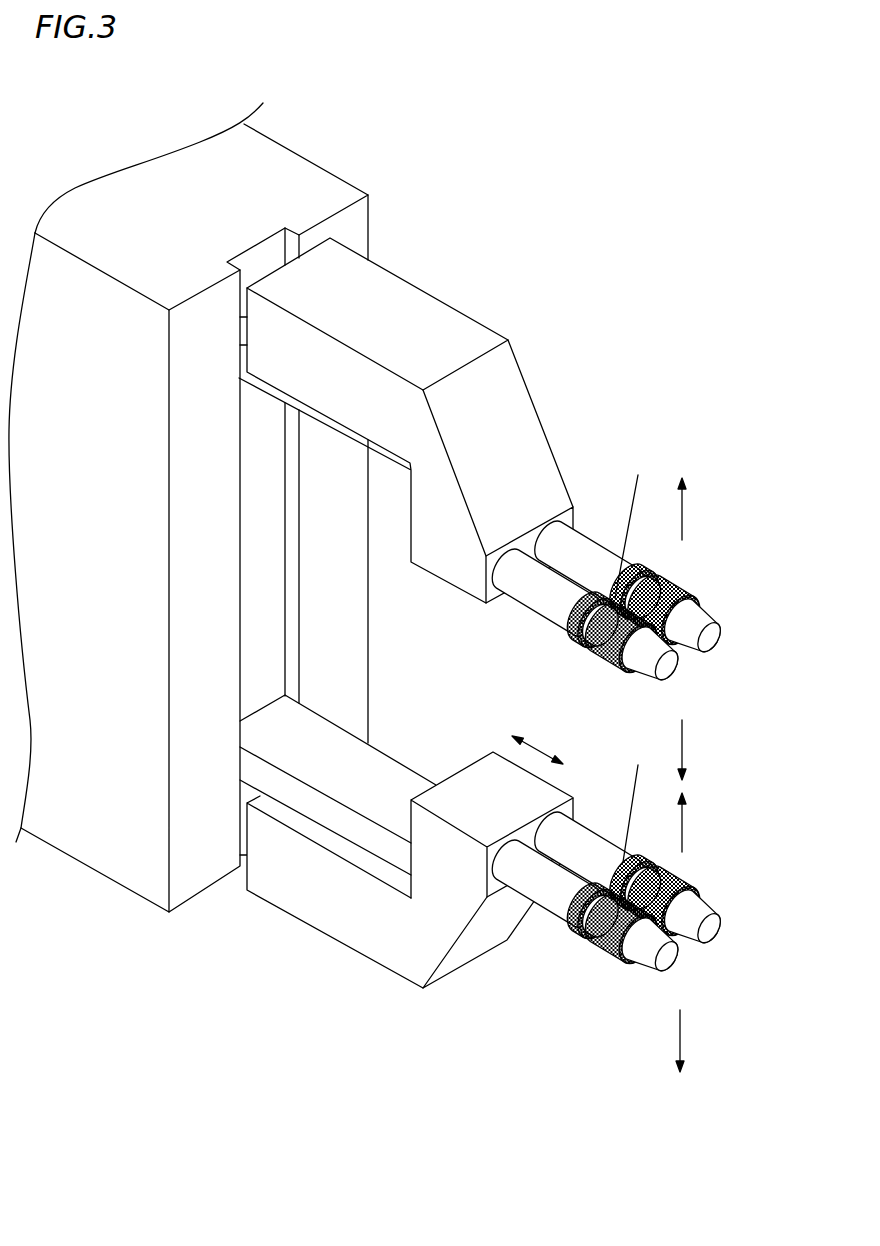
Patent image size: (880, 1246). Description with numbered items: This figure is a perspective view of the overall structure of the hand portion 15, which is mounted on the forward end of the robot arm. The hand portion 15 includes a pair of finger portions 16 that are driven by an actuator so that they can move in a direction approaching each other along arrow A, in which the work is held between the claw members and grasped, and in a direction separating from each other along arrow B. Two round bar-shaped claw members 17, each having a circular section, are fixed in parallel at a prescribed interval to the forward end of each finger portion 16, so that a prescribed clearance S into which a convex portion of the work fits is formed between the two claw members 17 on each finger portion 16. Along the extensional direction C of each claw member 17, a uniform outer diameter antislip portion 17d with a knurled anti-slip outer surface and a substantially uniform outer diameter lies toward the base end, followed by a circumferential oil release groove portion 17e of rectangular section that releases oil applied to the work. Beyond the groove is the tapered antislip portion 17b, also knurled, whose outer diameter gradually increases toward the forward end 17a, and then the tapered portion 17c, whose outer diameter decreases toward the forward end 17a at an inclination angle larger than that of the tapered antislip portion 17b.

The hand portion 15 is at (380, 150).
The finger portion 16 is at (440, 322).
The claw member 17 is at (547, 577).
The forward end 17a is at (714, 647).
The tapered antislip portion 17b is at (684, 592).
The tapered portion 17c is at (712, 612).
The uniform outer diameter antislip portion 17d is at (639, 566).
The oil release groove portion 17e is at (658, 584).
The clearance S is at (631, 655).
The direction approaching each other A is at (693, 786).
The direction separating from each other B is at (693, 775).
The extensional direction C is at (537, 742).